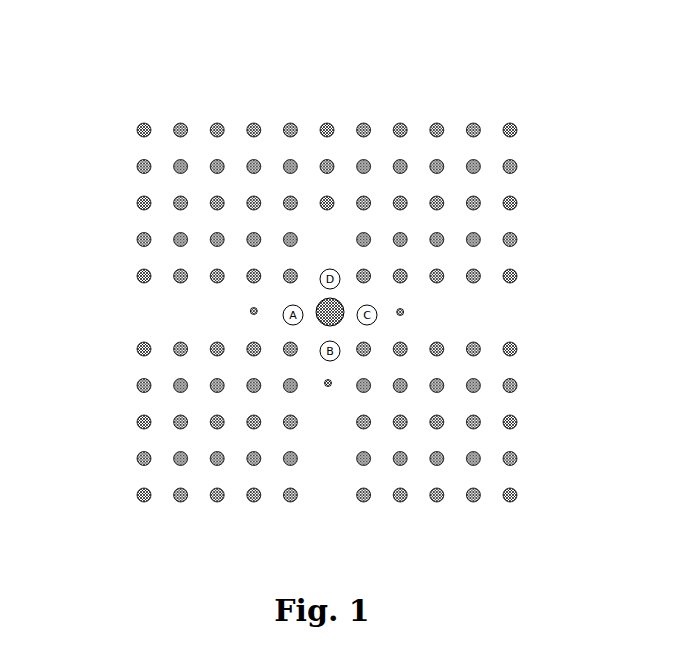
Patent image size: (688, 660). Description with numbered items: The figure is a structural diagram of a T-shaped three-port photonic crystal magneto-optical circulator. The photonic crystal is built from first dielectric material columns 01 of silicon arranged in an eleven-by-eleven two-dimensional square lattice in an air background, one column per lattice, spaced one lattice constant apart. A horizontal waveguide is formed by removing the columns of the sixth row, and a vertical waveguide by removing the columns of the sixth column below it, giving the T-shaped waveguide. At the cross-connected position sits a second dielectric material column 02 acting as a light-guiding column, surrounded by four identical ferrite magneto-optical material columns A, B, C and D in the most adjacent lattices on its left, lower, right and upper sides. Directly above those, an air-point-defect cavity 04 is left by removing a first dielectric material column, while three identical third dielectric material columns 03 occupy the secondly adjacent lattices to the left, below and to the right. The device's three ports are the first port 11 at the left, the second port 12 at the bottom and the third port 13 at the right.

The first dielectric material column 01 is at (509, 122).
The second dielectric material column 02 is at (320, 300).
The third dielectric material column 03 is at (325, 386).
The air-point-defect cavity 04 is at (331, 250).
The first port 11 is at (147, 313).
The second port 12 is at (328, 490).
The third port 13 is at (508, 313).